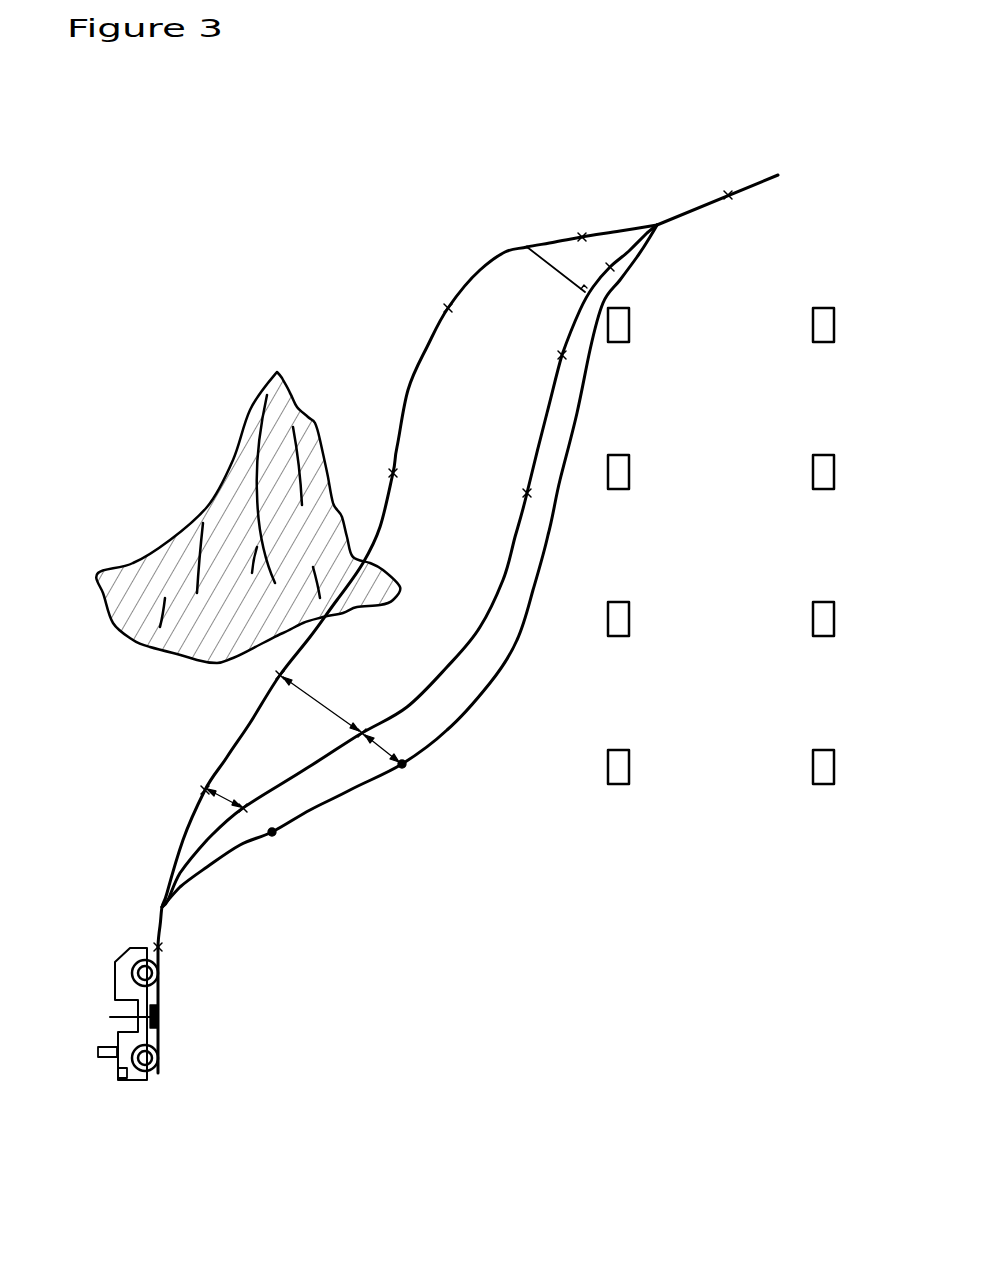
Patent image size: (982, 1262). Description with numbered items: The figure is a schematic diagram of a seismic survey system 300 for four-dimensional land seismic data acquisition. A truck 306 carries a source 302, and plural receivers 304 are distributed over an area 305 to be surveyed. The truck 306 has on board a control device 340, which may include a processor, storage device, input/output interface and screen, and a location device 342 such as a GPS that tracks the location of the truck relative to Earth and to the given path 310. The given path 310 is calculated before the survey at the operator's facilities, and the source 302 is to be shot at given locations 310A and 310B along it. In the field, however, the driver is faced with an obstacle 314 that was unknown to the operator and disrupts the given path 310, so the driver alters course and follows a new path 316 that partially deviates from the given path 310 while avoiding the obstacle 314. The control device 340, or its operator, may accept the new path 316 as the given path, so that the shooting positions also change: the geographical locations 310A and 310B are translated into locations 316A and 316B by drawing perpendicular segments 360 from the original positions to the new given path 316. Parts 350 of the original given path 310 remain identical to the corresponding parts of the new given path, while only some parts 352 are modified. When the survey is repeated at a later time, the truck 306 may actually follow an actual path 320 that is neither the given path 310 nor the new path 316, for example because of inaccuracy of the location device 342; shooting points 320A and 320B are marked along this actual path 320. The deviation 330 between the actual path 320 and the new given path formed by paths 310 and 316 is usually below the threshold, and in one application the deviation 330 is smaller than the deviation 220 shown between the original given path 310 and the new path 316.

The seismic survey system 300 is at (597, 157).
The source 302 is at (158, 1015).
The receivers 304 is at (629, 320).
The area 305 is at (758, 714).
The truck 306 is at (130, 968).
The given path 310 is at (408, 390).
The shooting location 310A is at (203, 788).
The shooting location 310B is at (277, 673).
The obstacle 314 is at (233, 513).
The new path 316 is at (447, 667).
The translated shooting location 316A is at (245, 810).
The translated shooting location 316B is at (364, 730).
The actual path 320 is at (577, 413).
The first point on third trajectory 320A is at (276, 834).
The second point on third trajectory 320B is at (406, 765).
The deviation 330 is at (383, 747).
The deviation 220 is at (225, 797).
The control device 340 is at (118, 1072).
The location device 342 is at (105, 1048).
The parts of original given path 350 is at (748, 183).
The modified parts of original given path 352 is at (513, 255).
The perpendicular segments 360 is at (546, 263).